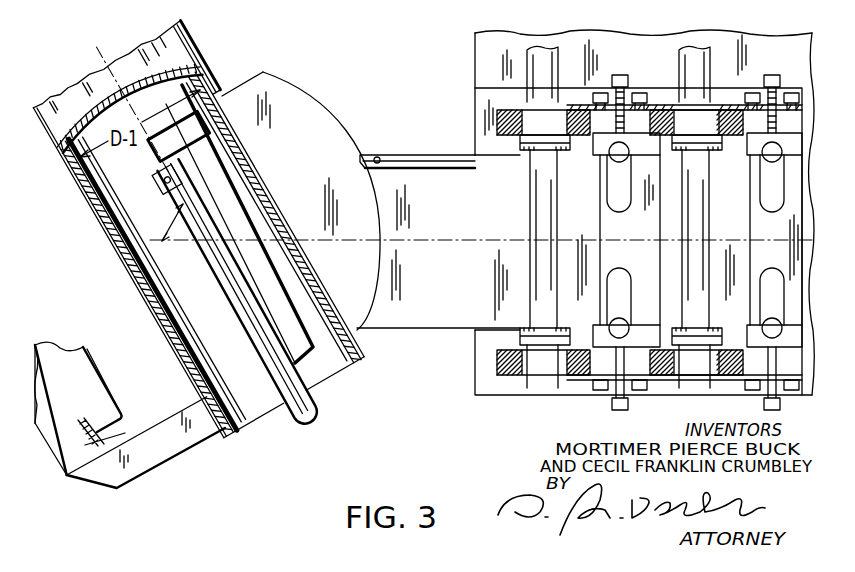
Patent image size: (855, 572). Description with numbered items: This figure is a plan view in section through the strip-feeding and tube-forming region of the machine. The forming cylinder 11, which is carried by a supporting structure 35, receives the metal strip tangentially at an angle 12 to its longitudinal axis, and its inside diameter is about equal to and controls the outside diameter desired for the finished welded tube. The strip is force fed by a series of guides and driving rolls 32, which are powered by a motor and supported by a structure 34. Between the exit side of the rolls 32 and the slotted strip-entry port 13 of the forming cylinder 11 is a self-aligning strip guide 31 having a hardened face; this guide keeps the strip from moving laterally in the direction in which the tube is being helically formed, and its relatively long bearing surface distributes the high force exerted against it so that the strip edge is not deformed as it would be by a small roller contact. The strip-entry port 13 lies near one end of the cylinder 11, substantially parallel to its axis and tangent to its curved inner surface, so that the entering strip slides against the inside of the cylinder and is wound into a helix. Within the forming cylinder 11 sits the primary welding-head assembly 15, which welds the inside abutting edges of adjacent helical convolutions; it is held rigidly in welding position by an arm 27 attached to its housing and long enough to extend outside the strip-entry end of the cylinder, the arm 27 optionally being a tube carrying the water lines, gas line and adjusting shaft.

The forming cylinder 11 is at (178, 349).
The angle 12 is at (161, 223).
The slotted strip-entry port 13 is at (157, 160).
The primary welding-head assembly 15 is at (160, 179).
The arm 27 is at (318, 411).
The self-aligning strip guide 31 is at (433, 143).
The rolls 32 is at (548, 214).
The structure 34 is at (478, 74).
The structure 35 is at (170, 450).